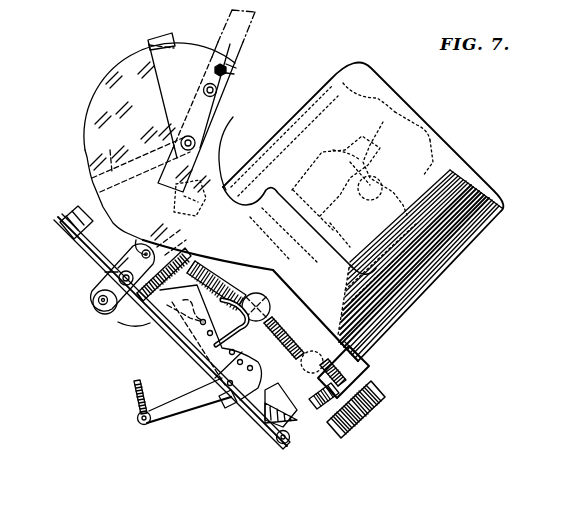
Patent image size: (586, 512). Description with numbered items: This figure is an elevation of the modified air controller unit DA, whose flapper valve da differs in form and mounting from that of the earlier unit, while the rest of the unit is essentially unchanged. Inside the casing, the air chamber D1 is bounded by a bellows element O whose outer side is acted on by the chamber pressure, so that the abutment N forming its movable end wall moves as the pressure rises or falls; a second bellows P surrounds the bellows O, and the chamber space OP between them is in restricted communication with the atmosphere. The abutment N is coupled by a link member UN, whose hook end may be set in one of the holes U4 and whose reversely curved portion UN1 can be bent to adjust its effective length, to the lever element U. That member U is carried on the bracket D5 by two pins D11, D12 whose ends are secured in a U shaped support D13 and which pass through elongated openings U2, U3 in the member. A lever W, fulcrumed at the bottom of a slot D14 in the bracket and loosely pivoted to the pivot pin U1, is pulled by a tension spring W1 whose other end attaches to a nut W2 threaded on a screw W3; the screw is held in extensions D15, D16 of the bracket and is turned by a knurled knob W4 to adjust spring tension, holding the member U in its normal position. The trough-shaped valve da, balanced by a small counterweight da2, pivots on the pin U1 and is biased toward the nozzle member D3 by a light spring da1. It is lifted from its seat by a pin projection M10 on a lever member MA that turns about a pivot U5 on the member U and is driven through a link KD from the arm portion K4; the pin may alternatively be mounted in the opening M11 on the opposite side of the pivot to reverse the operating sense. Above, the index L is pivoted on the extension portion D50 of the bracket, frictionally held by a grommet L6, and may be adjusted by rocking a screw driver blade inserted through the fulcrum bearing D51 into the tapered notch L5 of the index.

The air chamber D1 is at (490, 199).
The air controller unit DA is at (452, 280).
The extension from the bracket D15 is at (354, 280).
The bellows element O is at (404, 107).
The second bellows P is at (425, 132).
The chamber space OP is at (449, 146).
The abutment N is at (381, 169).
The slot in the bracket D14 is at (233, 184).
The link member UN is at (289, 194).
The bracket D5 is at (108, 88).
The arm portion of element K K4 is at (110, 148).
The index L is at (219, 133).
The tapered notch L5 is at (228, 73).
The fulcrum bearing D51 is at (238, 68).
The grommet L6 is at (224, 94).
The extension portion of the bracket D50 is at (232, 88).
The lever W is at (174, 207).
The counterweight da2 is at (72, 216).
The lever element U is at (118, 322).
The pivot pin U1 is at (118, 268).
The opening in member U U2 is at (126, 272).
The opening in member U U3 is at (117, 303).
The holes in member U U4 is at (150, 323).
The pin D12 is at (100, 300).
The U shaped support D13 is at (118, 272).
The pin D11 is at (136, 240).
The reversely curved portion UN1 is at (254, 264).
The light spring da1 is at (197, 286).
The opening in lever MA M11 is at (192, 383).
The link KD is at (137, 398).
The lever member MA is at (170, 410).
The pivot U5 is at (244, 410).
The flapper valve da is at (283, 452).
The pin projection M10 is at (296, 440).
The nozzle member D3 is at (312, 402).
The tension spring W1 is at (274, 356).
The extension from the bracket D16 is at (360, 366).
The nut W2 is at (382, 347).
The screw W3 is at (350, 392).
The knurled knob W4 is at (374, 402).